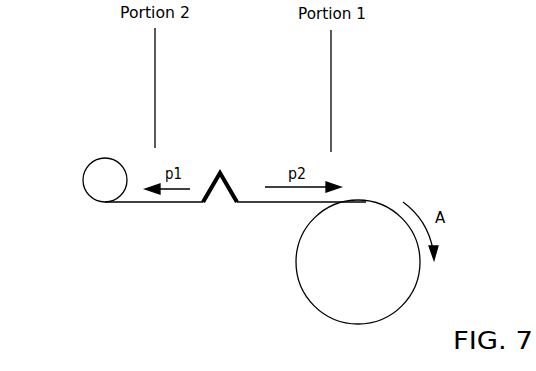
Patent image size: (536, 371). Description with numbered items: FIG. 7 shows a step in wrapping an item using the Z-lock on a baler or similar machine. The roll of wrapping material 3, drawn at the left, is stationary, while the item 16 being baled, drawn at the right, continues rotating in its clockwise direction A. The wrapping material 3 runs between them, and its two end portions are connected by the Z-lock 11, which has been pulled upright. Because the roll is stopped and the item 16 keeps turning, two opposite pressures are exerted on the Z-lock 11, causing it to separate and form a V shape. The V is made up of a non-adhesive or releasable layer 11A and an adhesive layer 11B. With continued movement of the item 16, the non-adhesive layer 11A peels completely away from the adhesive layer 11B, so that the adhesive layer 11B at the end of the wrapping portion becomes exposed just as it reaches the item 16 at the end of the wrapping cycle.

The wrapping material 3 is at (97, 180).
The Z-lock 11 is at (219, 157).
The non-adhesive layer 11A is at (213, 187).
The adhesive layer 11B is at (234, 200).
The item 16 is at (358, 262).